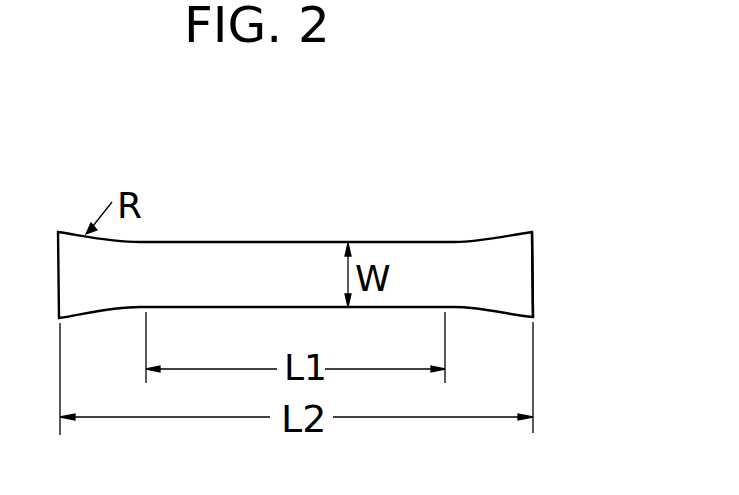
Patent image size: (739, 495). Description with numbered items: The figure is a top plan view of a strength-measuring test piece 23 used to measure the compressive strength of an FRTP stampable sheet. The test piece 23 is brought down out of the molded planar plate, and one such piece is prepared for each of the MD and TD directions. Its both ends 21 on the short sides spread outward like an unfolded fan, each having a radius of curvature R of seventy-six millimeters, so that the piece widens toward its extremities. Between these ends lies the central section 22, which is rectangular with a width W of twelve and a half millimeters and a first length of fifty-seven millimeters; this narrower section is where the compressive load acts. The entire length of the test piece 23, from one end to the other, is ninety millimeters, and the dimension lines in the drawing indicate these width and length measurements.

The both ends 21 is at (143, 177).
The central section 22 is at (445, 177).
The strength-measuring test piece 23 is at (543, 299).